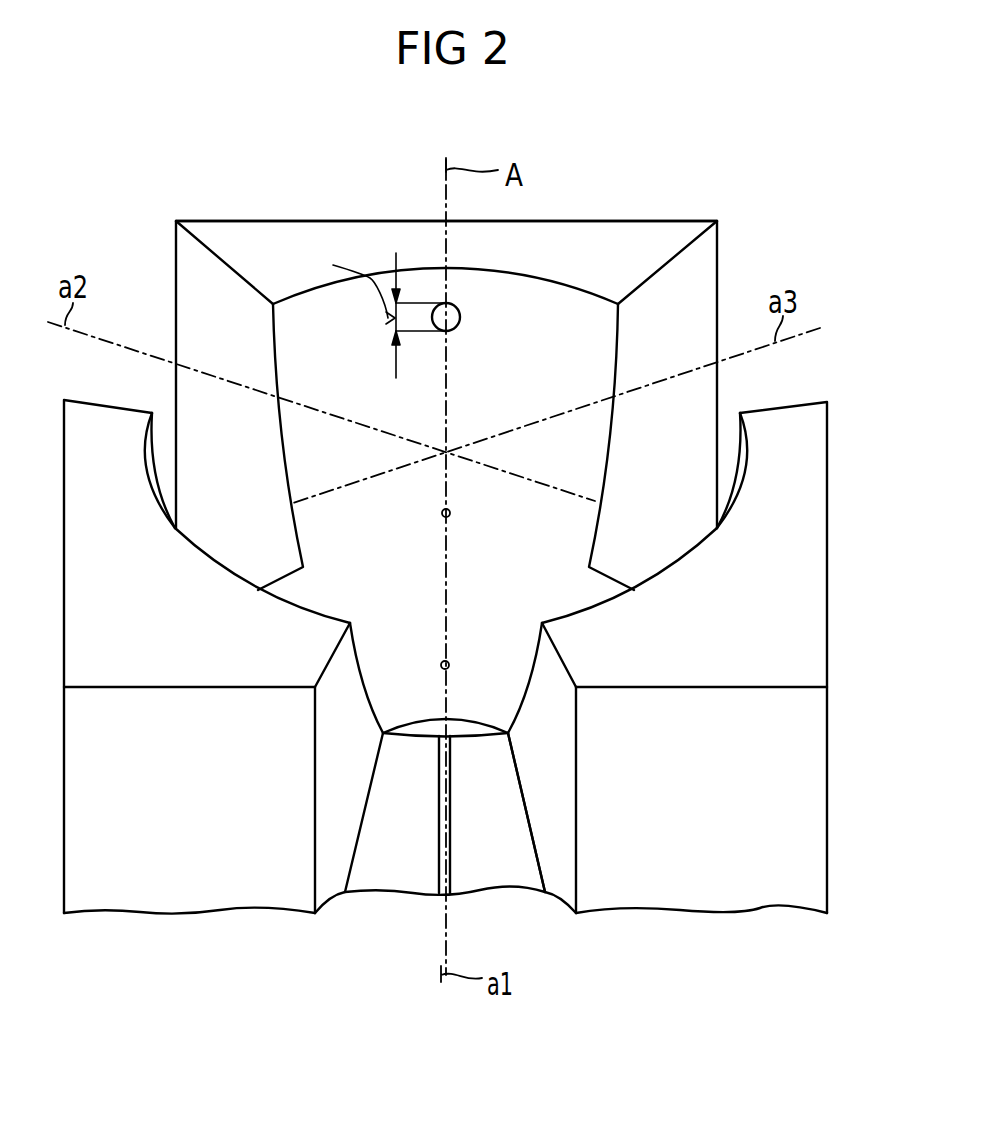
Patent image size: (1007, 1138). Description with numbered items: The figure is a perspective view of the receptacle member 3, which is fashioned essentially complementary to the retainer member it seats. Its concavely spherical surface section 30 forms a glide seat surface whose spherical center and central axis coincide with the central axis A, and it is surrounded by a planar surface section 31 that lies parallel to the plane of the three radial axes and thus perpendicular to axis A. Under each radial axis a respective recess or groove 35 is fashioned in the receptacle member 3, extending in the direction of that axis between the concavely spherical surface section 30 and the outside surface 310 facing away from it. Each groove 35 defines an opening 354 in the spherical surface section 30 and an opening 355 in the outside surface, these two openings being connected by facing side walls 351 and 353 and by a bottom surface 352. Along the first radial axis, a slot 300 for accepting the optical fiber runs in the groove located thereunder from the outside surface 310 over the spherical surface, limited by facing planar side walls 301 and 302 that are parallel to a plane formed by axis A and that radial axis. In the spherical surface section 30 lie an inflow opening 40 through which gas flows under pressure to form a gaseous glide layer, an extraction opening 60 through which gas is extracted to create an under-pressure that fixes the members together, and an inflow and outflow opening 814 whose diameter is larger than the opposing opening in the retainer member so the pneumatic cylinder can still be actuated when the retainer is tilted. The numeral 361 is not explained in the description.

The receptacle member 3 is at (727, 283).
The concavely spherical surface section 30 is at (317, 320).
The planar surface section 31 is at (795, 672).
The recess or groove 35 is at (212, 425).
The inflow opening 40 is at (441, 513).
The extraction opening 60 is at (449, 665).
The slot 300 is at (443, 853).
The planar side wall 301 is at (440, 773).
The planar side wall 302 is at (456, 806).
The outside surface 310 is at (797, 858).
The side wall 351 is at (606, 441).
The bottom surface 352 is at (490, 848).
The side wall 353 is at (203, 277).
The opening 354 is at (618, 390).
The opening 355 is at (176, 236).
The shoulder face 361 is at (407, 722).
The inflow and outflow opening 814 is at (461, 317).